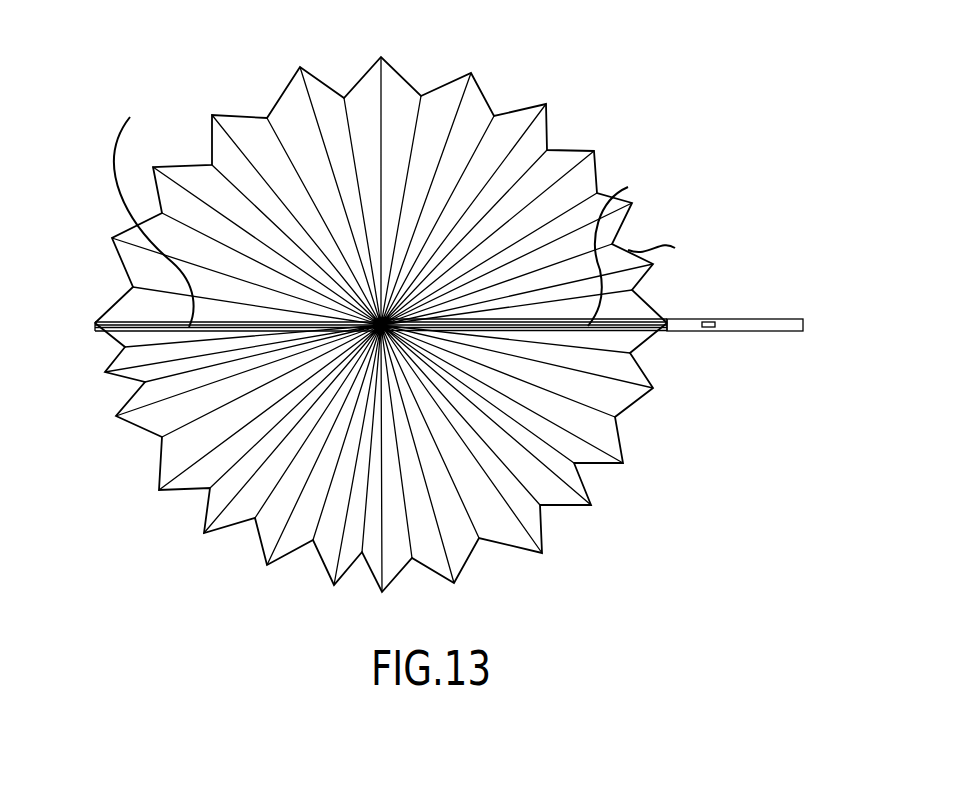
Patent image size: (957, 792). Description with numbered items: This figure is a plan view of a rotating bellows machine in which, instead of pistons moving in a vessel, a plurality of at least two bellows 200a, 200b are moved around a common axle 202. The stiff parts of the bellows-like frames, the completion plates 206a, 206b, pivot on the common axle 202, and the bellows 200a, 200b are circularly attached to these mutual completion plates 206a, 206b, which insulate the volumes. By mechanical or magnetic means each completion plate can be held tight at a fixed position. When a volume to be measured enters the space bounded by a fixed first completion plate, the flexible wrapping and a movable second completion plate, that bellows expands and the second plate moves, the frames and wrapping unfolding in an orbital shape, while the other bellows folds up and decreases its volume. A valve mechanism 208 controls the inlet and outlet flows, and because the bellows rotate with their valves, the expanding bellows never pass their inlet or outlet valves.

The bellows 200a is at (355, 556).
The bellows 200b is at (250, 128).
The common axle 202 is at (380, 318).
The completion plate 206a is at (95, 328).
The completion plate 206b is at (650, 327).
The valve mechanism 208 is at (713, 321).